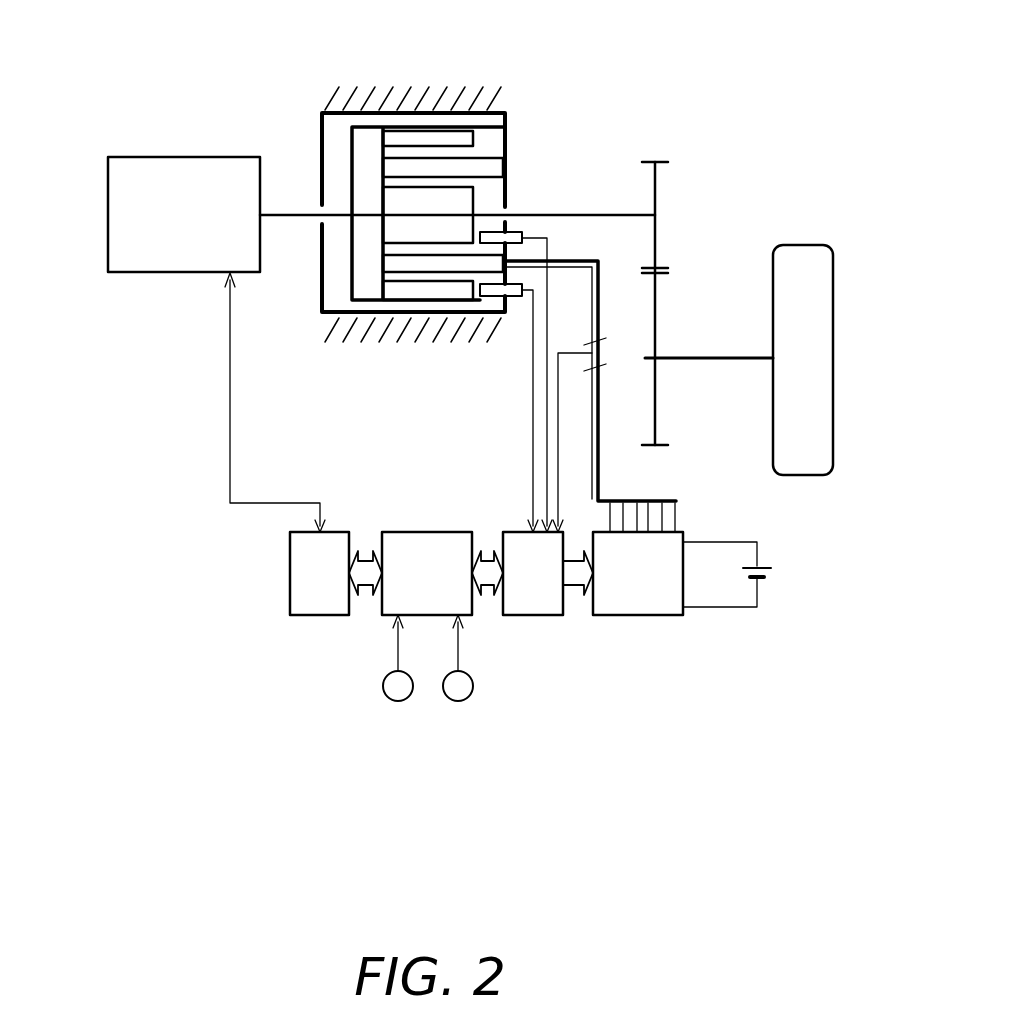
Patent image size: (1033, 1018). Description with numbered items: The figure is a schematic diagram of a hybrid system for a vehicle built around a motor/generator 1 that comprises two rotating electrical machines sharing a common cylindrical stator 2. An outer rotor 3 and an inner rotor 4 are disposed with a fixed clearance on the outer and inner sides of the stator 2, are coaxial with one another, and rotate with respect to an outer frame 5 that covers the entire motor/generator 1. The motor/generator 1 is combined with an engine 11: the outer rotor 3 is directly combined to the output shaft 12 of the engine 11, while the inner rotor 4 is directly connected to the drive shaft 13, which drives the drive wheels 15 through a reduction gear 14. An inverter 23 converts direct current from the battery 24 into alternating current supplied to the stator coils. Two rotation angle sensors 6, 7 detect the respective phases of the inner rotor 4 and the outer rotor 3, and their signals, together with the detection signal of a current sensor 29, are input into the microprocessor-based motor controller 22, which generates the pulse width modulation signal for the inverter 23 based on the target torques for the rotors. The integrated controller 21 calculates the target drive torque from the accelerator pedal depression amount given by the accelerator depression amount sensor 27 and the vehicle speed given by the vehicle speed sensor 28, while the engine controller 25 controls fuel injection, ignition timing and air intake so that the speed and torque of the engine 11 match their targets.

The motor/generator 1 is at (314, 153).
The cylindrical stator 2 is at (493, 165).
The outer rotor 3 is at (507, 120).
The inner rotor 4 is at (460, 202).
The outer frame 5 is at (465, 138).
The inner rotor rotation angle sensor 6 is at (508, 235).
The outer rotor rotation angle sensor 7 is at (512, 297).
The engine 11 is at (133, 233).
The output shaft 12 is at (296, 220).
The drive shaft 13 is at (593, 216).
The reduction gear 14 is at (683, 251).
The drive wheels 15 is at (810, 290).
The integrated controller 21 is at (400, 597).
The motor controller 22 is at (535, 603).
The inverter 23 is at (645, 598).
The battery 24 is at (772, 575).
The engine controller 25 is at (313, 597).
The accelerator depression amount sensor 27 is at (398, 700).
The vehicle speed sensor 28 is at (458, 701).
The current sensor 29 is at (600, 358).